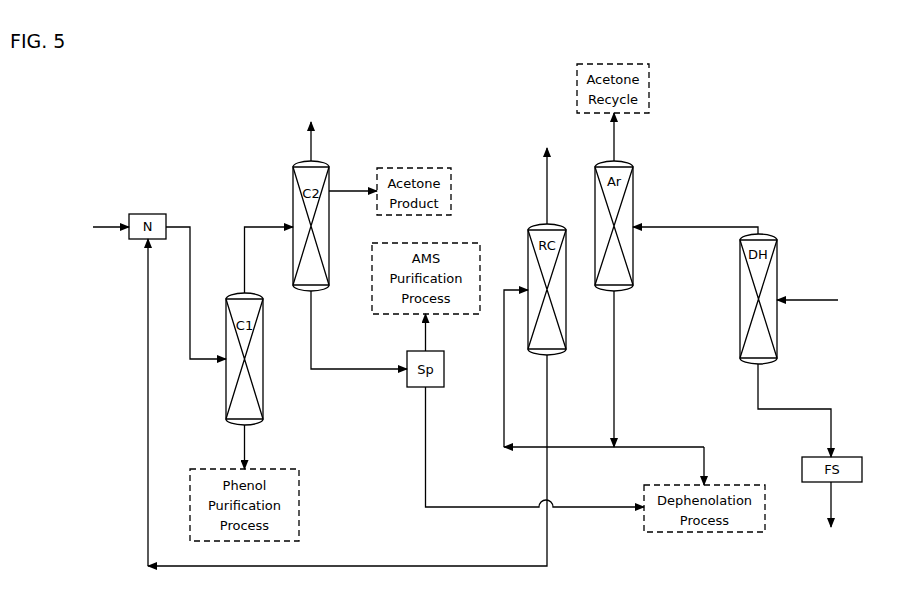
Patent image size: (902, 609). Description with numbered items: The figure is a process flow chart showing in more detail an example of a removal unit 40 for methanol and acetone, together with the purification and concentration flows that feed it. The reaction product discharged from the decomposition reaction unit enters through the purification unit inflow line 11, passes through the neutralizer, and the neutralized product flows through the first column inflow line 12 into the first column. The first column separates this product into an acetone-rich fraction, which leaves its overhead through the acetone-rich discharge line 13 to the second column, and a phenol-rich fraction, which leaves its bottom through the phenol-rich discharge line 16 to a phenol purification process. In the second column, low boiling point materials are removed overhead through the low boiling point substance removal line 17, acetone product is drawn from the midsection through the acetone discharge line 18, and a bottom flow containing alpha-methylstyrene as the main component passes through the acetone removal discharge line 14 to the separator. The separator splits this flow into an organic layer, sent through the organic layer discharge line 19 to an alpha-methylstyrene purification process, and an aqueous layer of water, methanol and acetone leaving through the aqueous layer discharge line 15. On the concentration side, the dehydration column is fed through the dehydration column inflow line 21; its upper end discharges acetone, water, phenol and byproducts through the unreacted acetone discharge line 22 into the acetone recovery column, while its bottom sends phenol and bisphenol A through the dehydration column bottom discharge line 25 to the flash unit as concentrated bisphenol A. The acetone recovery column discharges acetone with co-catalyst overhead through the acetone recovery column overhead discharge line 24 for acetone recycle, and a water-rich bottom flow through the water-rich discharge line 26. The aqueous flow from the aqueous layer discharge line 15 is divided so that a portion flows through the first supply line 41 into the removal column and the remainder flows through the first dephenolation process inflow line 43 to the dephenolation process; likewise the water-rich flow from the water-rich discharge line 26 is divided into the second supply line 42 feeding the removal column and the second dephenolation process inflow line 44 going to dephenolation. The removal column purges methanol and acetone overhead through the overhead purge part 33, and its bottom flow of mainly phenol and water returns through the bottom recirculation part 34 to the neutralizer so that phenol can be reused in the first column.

The removal unit 40 is at (134, 106).
The purification unit inflow line 11 is at (111, 218).
The first column inflow line 12 is at (196, 293).
The acetone-rich discharge line 13 is at (269, 251).
The acetone removal discharge line 14 is at (348, 330).
The aqueous layer discharge line 15 is at (453, 447).
The phenol-rich discharge line 16 is at (256, 447).
The low boiling point substance removal line 17 is at (300, 141).
The acetone discharge line 18 is at (353, 201).
The organic layer discharge line 19 is at (416, 332).
The dehydration column inflow line 21 is at (807, 290).
The unreacted acetone discharge line 22 is at (695, 221).
The acetone recovery column overhead discharge line 24 is at (624, 137).
The dehydration column bottom discharge line 25 is at (794, 410).
The water-rich discharge line 26 is at (604, 369).
The overhead purge part 33 is at (558, 186).
The bottom recirculation part 34 is at (347, 413).
The first supply line 41 is at (504, 368).
The second supply line 42 is at (604, 457).
The first dephenolation process inflow line 43 is at (572, 514).
The second dephenolation process inflow line 44 is at (691, 466).